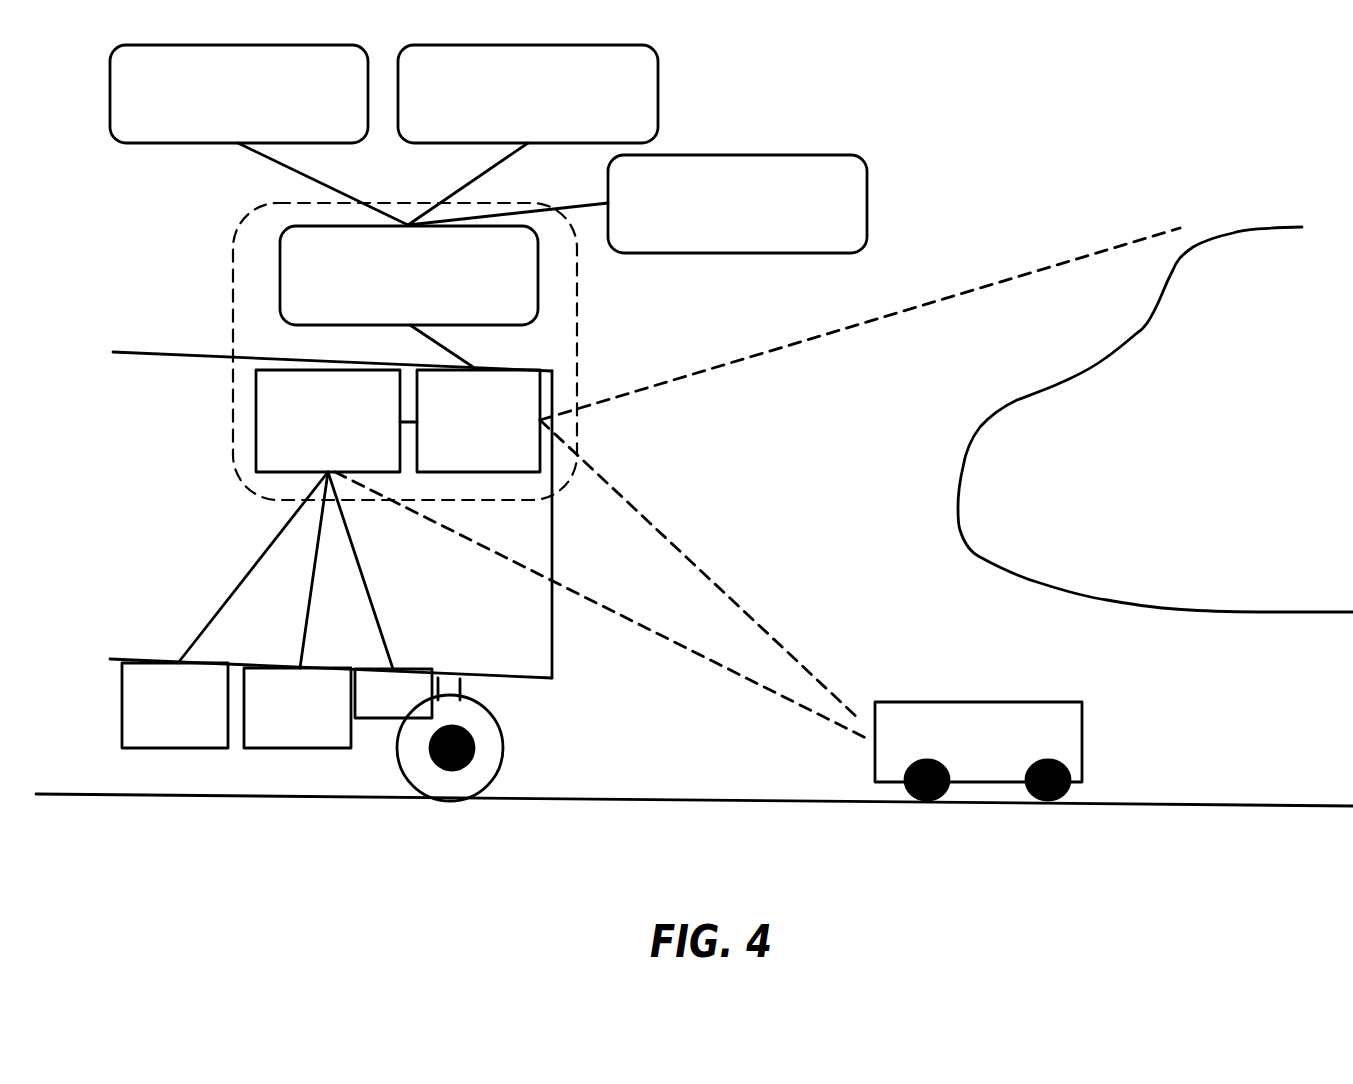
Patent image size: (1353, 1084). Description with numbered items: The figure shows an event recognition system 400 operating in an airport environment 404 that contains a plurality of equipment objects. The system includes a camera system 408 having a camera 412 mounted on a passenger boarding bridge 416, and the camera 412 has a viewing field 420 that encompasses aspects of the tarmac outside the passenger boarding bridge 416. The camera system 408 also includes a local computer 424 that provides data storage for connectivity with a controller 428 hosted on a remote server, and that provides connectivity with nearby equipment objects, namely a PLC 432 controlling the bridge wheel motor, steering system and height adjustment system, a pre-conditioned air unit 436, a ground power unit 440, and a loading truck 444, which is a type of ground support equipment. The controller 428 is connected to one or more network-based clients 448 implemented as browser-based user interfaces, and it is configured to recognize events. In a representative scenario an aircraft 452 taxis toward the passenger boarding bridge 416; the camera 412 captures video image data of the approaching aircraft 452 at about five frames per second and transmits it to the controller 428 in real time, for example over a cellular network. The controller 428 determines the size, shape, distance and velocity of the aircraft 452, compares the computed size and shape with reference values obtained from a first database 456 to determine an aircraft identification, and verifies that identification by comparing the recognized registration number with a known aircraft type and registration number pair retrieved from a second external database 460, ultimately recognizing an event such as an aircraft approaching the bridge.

The event recognition system 400 is at (982, 203).
The airport environment 404 is at (694, 819).
The camera system 408 is at (230, 274).
The camera 412 is at (478, 421).
The passenger boarding bridge 416 is at (145, 352).
The viewing field 420 is at (757, 484).
The local computer 424 is at (297, 519).
The controller 428 is at (409, 296).
The PLC 432 is at (393, 693).
The pre-conditioned air unit 436 is at (297, 708).
The ground power unit 440 is at (175, 705).
The loading truck 444 is at (978, 751).
The network-based client 448 is at (259, 135).
The aircraft 452 is at (1155, 419).
The database 456 is at (528, 135).
The second external database 460 is at (637, 204).